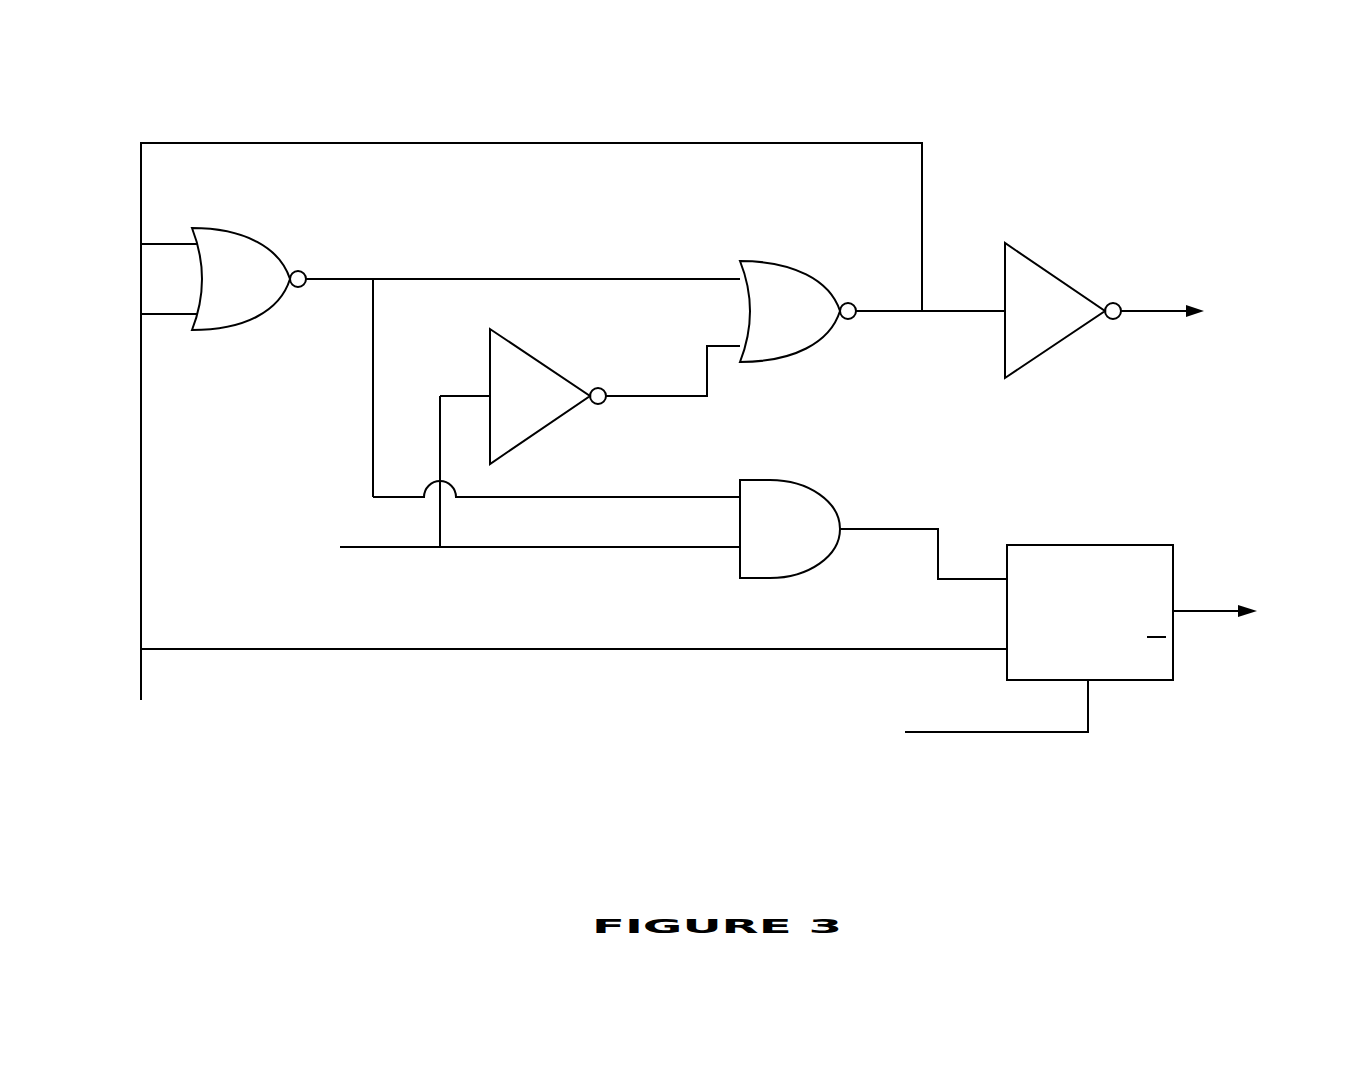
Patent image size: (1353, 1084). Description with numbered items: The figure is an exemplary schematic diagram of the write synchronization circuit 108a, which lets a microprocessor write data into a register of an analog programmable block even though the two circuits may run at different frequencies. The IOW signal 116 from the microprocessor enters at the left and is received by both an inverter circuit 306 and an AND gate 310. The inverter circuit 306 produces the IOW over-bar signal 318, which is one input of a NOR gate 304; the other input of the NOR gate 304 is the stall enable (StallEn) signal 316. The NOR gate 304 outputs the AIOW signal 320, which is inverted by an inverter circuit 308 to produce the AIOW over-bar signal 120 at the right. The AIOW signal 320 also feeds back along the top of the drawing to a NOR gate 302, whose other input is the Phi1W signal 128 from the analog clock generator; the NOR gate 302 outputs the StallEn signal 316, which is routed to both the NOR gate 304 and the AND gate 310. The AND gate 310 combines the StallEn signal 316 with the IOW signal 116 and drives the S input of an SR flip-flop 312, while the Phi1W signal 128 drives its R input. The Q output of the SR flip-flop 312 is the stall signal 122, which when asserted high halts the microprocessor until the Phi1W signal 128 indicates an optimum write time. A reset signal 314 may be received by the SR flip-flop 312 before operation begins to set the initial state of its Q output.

The write synchronization circuit 108a is at (117, 81).
The NOR gate 302 is at (258, 292).
The NOR gate 304 is at (808, 322).
The inverter circuit 306 is at (540, 407).
The inverter circuit 308 is at (1058, 321).
The AND gate 310 is at (805, 542).
The SR flip-flop 312 is at (1107, 665).
The reset signal 314 is at (959, 725).
The stall enable (StallEn) signal 316 is at (358, 258).
The IOW over-bar signal 318 is at (680, 371).
The AIOW signal 320 is at (531, 216).
The IOW signal 116 is at (516, 489).
The AIOW over-bar signal 120 is at (1277, 297).
The stall signal 122 is at (1254, 630).
The Phi1W signal 128 is at (557, 533).